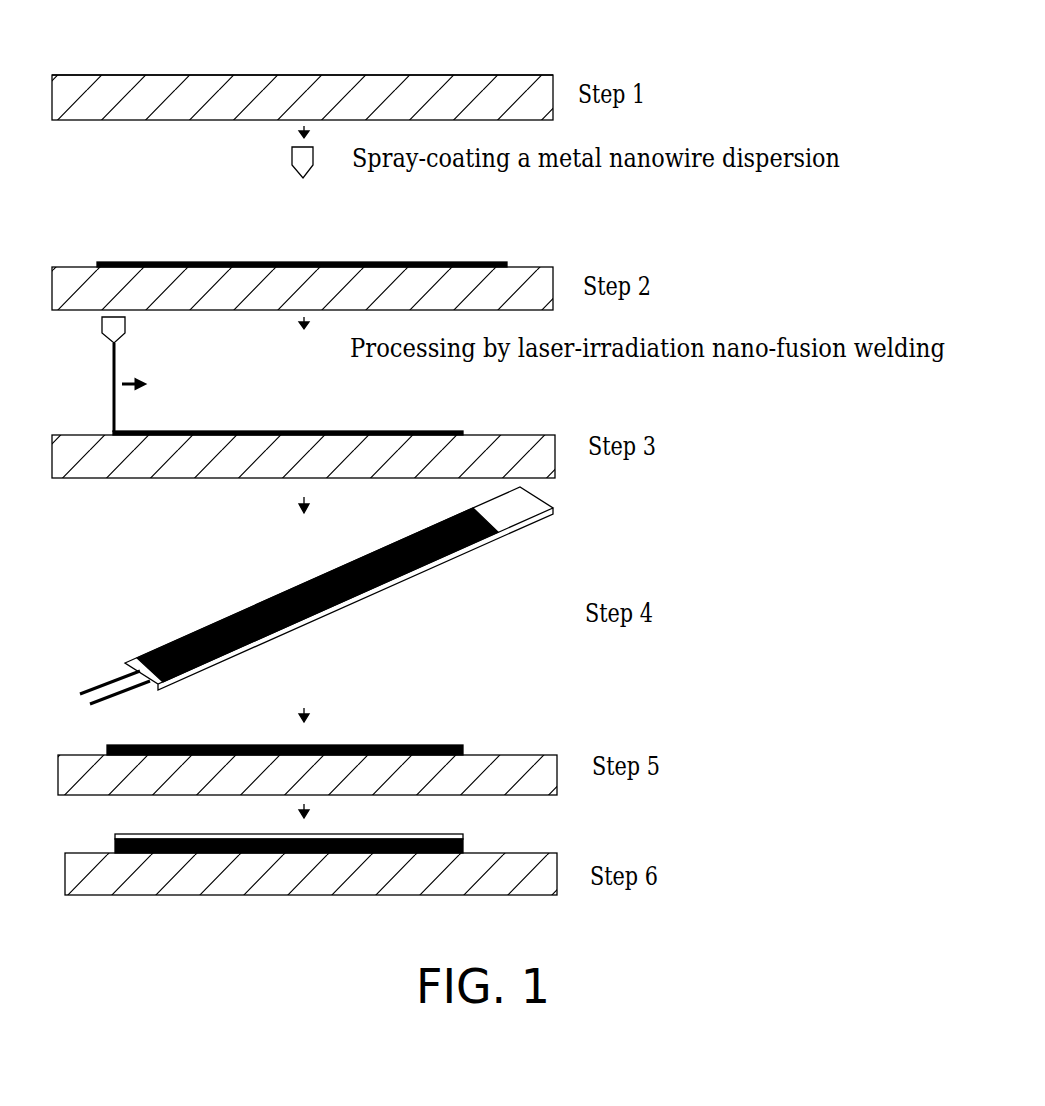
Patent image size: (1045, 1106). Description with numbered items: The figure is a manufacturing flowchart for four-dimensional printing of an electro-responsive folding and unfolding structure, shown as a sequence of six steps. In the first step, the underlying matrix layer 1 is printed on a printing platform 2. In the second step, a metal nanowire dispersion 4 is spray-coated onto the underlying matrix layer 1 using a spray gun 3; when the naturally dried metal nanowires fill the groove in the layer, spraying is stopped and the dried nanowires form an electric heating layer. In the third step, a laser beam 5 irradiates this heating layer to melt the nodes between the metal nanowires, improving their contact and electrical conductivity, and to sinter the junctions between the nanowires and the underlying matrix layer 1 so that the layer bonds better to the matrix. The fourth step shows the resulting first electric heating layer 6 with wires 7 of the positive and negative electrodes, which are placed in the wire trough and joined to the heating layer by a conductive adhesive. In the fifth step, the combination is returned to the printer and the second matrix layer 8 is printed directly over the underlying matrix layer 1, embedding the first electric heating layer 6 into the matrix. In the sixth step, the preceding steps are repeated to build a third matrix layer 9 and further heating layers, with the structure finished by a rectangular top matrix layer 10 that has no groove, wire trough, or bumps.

The underlying matrix layer 1 is at (102, 78).
The printing platform 2 is at (188, 82).
The spray gun 3 is at (290, 172).
The metal nanowire dispersion 4 is at (275, 202).
The laser beam 5 is at (112, 388).
The first electric heating layer 6 is at (130, 653).
The wire 7 is at (108, 680).
The second matrix layer 8 is at (108, 747).
The third matrix layer 9 is at (115, 843).
The top matrix layer 10 is at (117, 835).